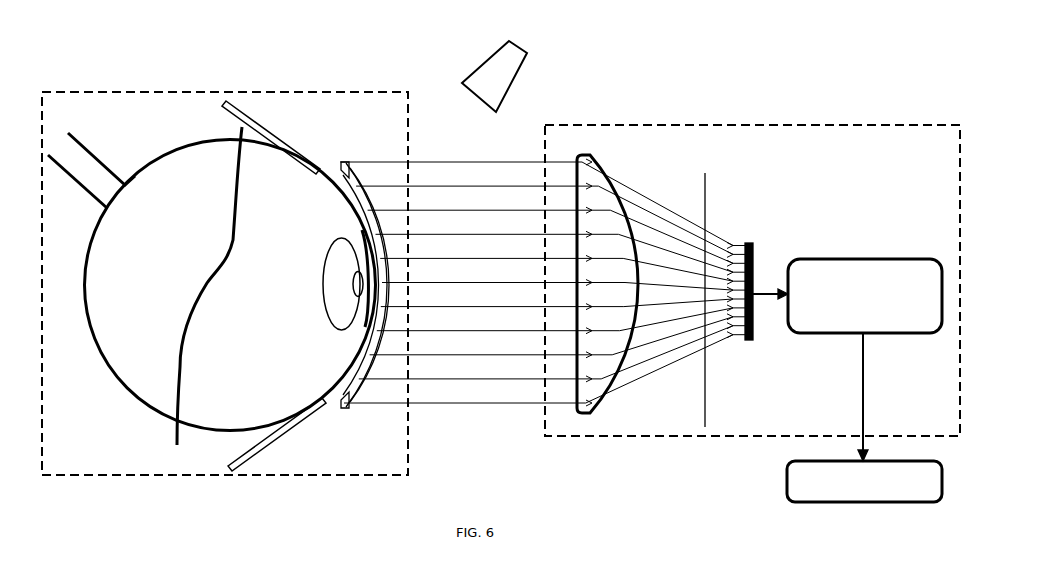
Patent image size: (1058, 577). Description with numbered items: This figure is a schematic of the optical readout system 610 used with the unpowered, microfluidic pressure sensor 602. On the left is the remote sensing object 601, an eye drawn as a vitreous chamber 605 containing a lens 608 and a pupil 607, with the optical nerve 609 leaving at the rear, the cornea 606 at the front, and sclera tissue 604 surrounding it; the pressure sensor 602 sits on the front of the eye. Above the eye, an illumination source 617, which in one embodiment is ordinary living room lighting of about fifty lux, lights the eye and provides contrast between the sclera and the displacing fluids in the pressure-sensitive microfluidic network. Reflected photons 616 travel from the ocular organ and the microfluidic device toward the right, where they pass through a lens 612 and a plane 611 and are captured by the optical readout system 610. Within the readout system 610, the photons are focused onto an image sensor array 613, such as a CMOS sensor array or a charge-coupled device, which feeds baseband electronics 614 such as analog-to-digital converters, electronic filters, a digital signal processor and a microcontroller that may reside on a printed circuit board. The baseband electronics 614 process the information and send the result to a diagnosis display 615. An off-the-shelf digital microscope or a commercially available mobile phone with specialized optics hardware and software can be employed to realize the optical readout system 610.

The remote sensing object 601 is at (113, 92).
The unpowered, microfluidic pressure sensor 602 is at (345, 170).
The sclera tissue 604 is at (240, 443).
The vitreous chamber 605 is at (183, 268).
The cornea 606 is at (364, 322).
The pupil 607 is at (353, 292).
The lens 608 is at (327, 260).
The optical nerve 609 is at (115, 163).
The optical readout system 610 is at (840, 125).
The focal plane 611 is at (707, 197).
The lens 612 is at (590, 155).
The image sensor array 613 is at (753, 267).
The baseband electronics 614 is at (863, 258).
The diagnosis display 615 is at (784, 477).
The reflected photons 616 is at (465, 405).
The illumination source 617 is at (483, 63).